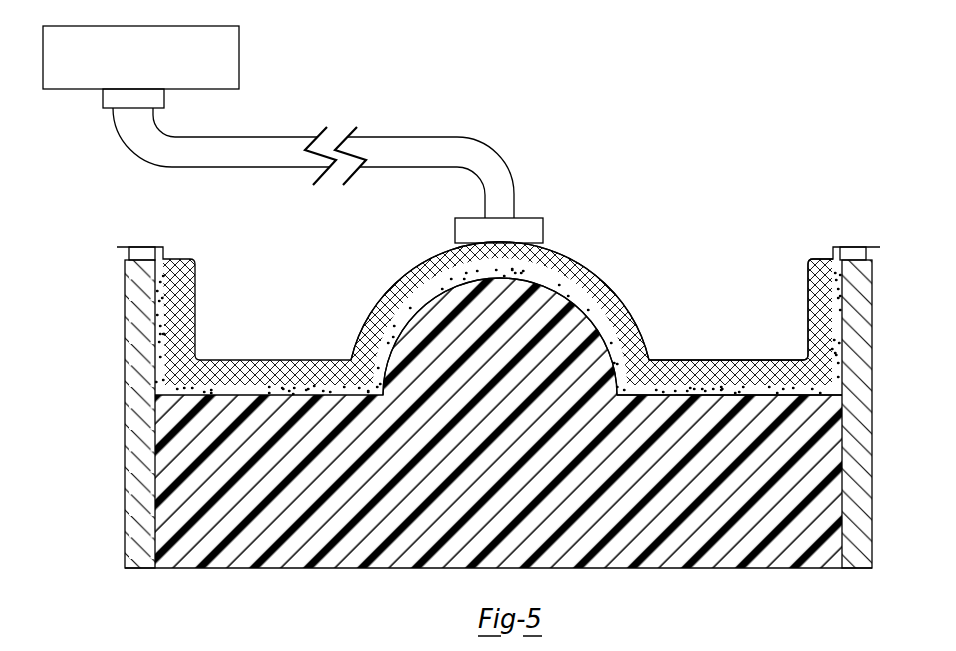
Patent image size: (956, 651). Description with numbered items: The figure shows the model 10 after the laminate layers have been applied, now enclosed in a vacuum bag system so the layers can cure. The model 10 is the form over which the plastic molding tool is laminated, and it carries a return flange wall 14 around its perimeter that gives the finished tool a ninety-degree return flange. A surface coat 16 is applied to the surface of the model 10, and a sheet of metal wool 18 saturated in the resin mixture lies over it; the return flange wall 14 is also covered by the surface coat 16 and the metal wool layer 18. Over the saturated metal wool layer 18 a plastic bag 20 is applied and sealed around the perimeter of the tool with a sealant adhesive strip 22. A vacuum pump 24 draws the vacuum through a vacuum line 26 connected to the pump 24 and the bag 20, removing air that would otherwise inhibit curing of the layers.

The model 10 is at (210, 590).
The return flange wall 14 is at (134, 331).
The surface coat 16 is at (260, 392).
The metal wool layer 18 is at (691, 372).
The plastic bag 20 is at (577, 258).
The sealant adhesive strip 22 is at (143, 247).
The vacuum pump 24 is at (227, 52).
The vacuum line 26 is at (267, 148).